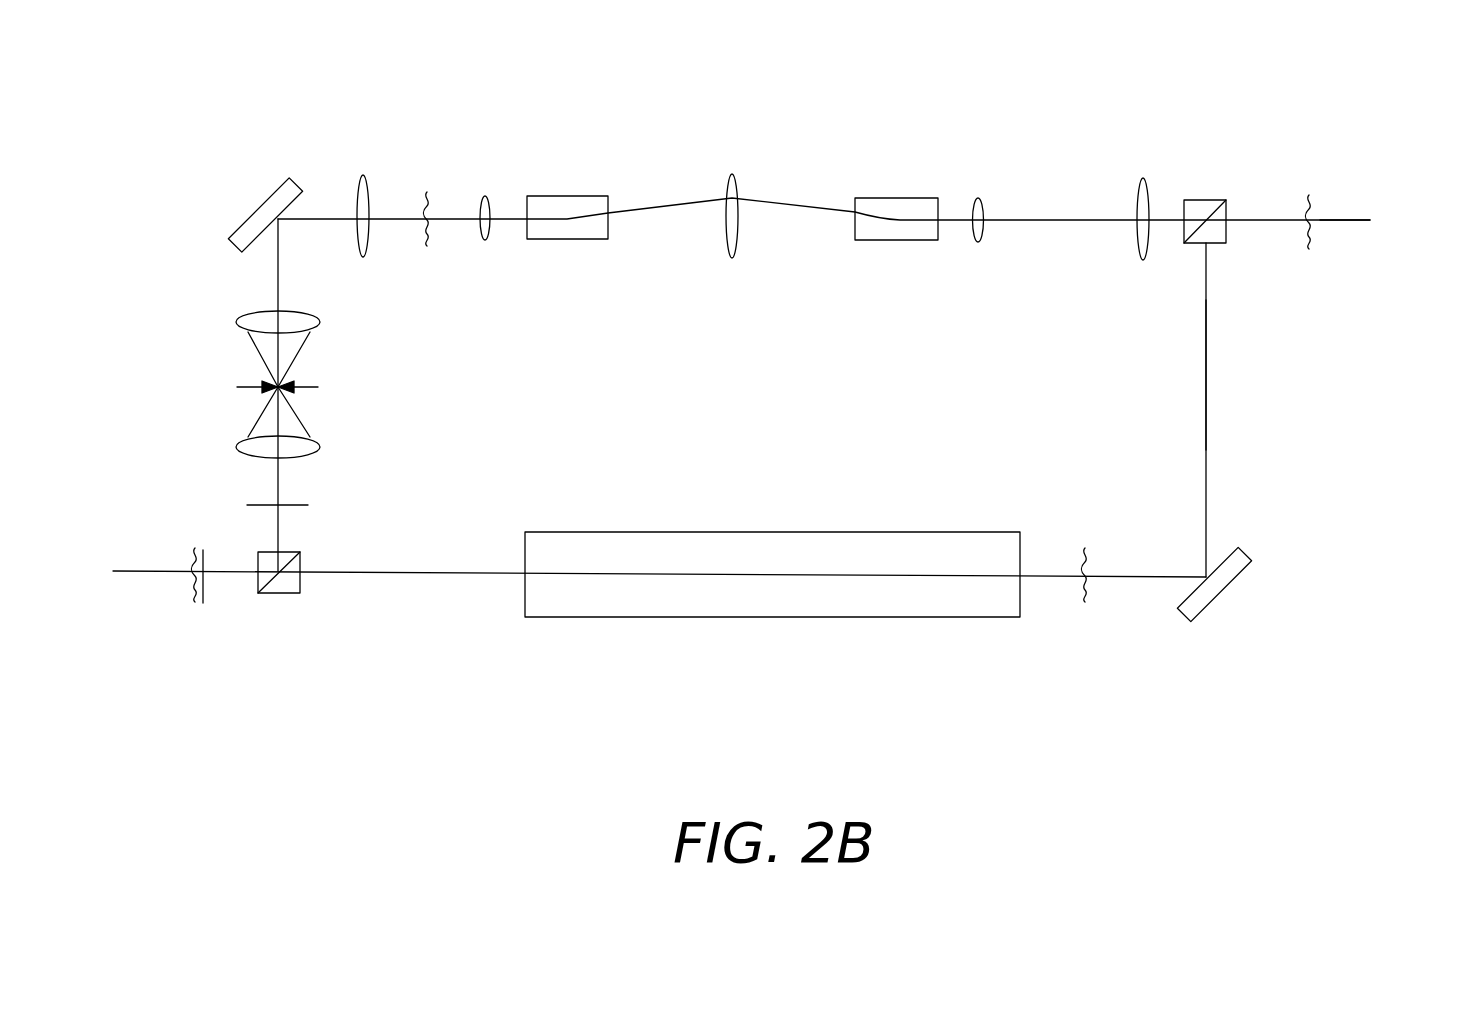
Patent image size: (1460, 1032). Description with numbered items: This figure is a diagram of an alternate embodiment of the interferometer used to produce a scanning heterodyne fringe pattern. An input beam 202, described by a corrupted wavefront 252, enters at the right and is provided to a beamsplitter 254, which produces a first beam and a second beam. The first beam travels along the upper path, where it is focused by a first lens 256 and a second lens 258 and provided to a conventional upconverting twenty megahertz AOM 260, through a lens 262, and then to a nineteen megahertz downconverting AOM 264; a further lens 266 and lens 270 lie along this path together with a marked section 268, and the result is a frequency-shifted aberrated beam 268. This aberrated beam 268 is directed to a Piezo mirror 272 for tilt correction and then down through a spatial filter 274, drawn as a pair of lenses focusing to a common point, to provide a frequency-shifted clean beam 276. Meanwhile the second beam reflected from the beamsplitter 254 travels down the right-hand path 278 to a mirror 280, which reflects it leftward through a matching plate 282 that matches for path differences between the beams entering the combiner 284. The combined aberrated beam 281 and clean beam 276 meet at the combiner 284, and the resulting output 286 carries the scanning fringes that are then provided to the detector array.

The input beam 202 is at (1350, 224).
The corrupted wavefront 252 is at (1316, 213).
The beamsplitter 254 is at (1205, 200).
The first lens 256 is at (1143, 260).
The second lens 258 is at (978, 198).
The upconverting 20 MHz AOM 260 is at (912, 198).
The lens 262 is at (732, 258).
The 19 MHz downconverting AOM 264 is at (592, 196).
The lens 266 is at (485, 240).
The frequency-shifted aberrated beam 268 is at (427, 192).
The lens 270 is at (363, 257).
The Piezo mirror 272 is at (257, 217).
The spatial filter 274 is at (345, 313).
The clean beam 276 is at (322, 505).
The beam path 278 is at (1206, 373).
The mirror 280 is at (1225, 590).
The combined aberrated beam 281 is at (1085, 607).
The matching plate 282 is at (765, 532).
The combiner 284 is at (292, 593).
The output beam 286 is at (205, 613).